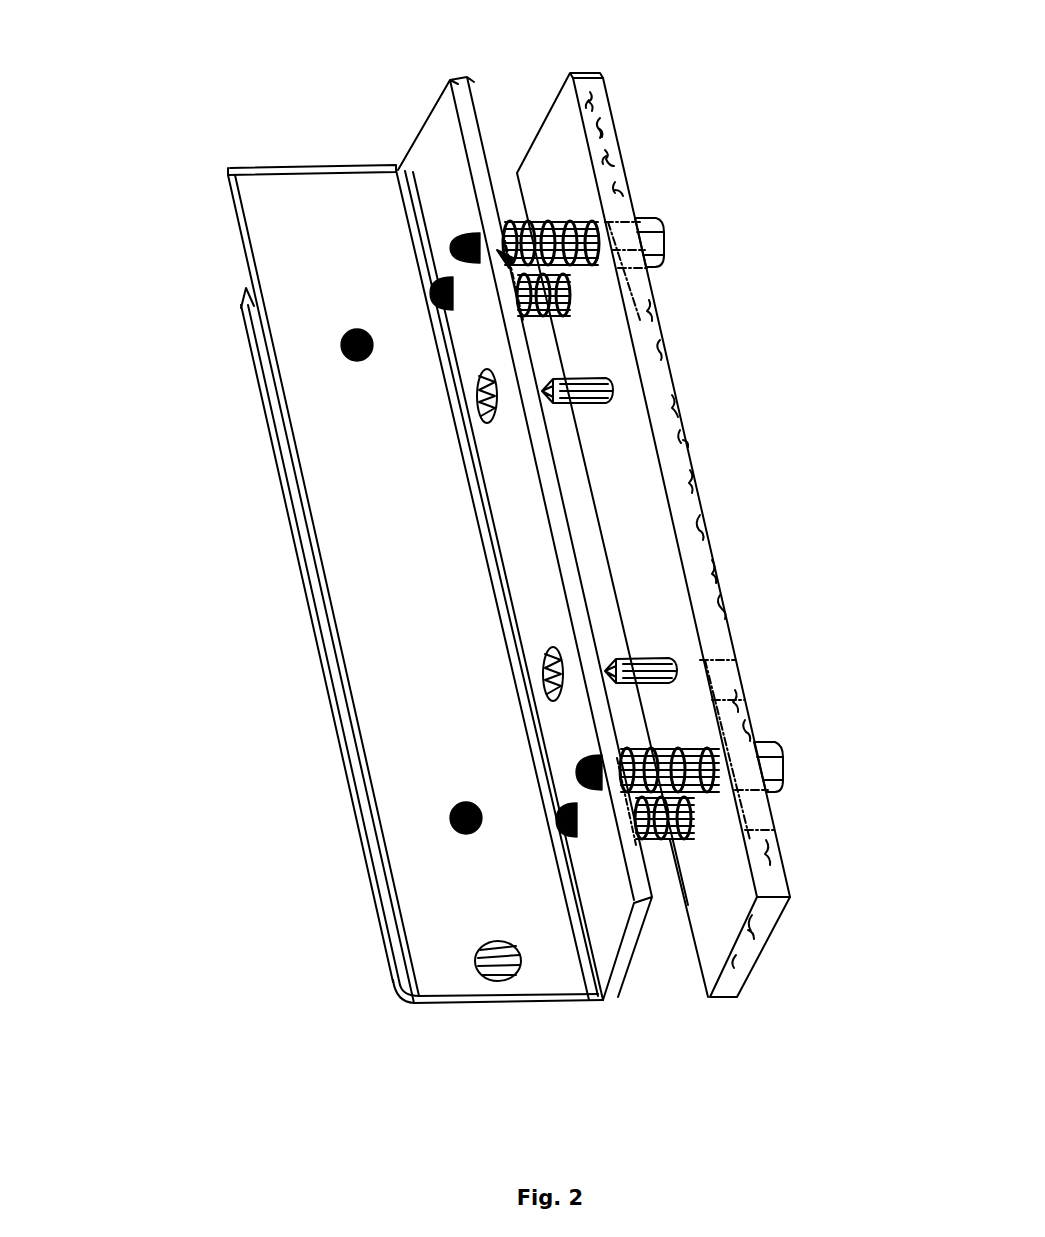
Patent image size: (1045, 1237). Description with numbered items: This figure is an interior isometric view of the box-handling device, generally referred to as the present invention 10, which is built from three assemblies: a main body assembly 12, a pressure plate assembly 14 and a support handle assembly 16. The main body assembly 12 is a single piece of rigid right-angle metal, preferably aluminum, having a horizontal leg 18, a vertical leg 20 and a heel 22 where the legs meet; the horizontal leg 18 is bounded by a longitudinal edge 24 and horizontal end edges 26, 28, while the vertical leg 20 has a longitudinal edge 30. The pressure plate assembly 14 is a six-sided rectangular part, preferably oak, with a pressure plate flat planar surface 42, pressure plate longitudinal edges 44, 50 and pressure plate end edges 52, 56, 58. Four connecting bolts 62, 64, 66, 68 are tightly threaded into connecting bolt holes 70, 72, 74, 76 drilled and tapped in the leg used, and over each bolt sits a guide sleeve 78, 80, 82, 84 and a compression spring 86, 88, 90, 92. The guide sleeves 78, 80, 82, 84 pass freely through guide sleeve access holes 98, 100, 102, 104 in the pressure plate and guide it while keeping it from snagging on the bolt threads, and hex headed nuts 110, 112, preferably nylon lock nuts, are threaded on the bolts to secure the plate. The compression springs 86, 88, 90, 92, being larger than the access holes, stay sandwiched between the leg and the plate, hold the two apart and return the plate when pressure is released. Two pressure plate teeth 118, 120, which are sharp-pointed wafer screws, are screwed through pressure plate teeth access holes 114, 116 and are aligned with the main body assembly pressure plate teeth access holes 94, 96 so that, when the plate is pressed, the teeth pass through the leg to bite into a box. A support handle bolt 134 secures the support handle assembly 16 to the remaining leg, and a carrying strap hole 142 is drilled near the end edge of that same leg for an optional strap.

The present invention 10 is at (114, 74).
The main body assembly 12 is at (295, 82).
The pressure plate assembly 14 is at (670, 92).
The support handle assembly 16 is at (183, 462).
The horizontal leg 18 is at (228, 178).
The vertical leg 20 is at (617, 952).
The heel 22 is at (607, 1007).
The longitudinal edge 24 is at (400, 918).
The horizontal end edge 26 is at (483, 998).
The horizontal end edge 28 is at (448, 997).
The longitudinal edge 30 is at (643, 927).
The pressure plate flat planar surface 42 is at (627, 477).
The pressure plate longitudinal edge 44 is at (702, 527).
The pressure plate longitudinal edge 50 is at (647, 437).
The pressure plate end edge 52 is at (777, 922).
The pressure plate end edge 56 is at (545, 123).
The pressure plate end edge 58 is at (737, 947).
The connecting bolt 62 is at (433, 293).
The connecting bolt 64 is at (552, 815).
The connecting bolt 66 is at (463, 247).
The connecting bolt 68 is at (615, 767).
The connecting bolt hole 70 is at (512, 292).
The connecting bolt hole 72 is at (630, 822).
The connecting bolt hole 74 is at (500, 242).
The connecting bolt hole 76 is at (612, 762).
The guide sleeve 78 is at (710, 793).
The guide sleeve 80 is at (555, 305).
The guide sleeve 82 is at (693, 838).
The guide sleeve 84 is at (547, 220).
The compression spring 86 is at (675, 840).
The compression spring 88 is at (515, 330).
The compression spring 90 is at (657, 745).
The compression spring 92 is at (508, 225).
The main body assembly pressure plate teeth access hole 94 is at (547, 657).
The main body assembly pressure plate teeth access hole 96 is at (488, 428).
The guide sleeve access hole 98 is at (757, 800).
The guide sleeve access hole 100 is at (647, 282).
The guide sleeve access hole 102 is at (727, 747).
The guide sleeve access hole 104 is at (610, 222).
The hex headed nut 110 is at (782, 752).
The hex headed nut 112 is at (658, 222).
The pressure plate teeth access hole 114 is at (720, 680).
The pressure plate teeth access hole 116 is at (662, 393).
The pressure plate tooth 118 is at (672, 662).
The pressure plate tooth 120 is at (613, 380).
The support handle bolt 134 is at (450, 823).
The carrying strap hole 142 is at (480, 963).